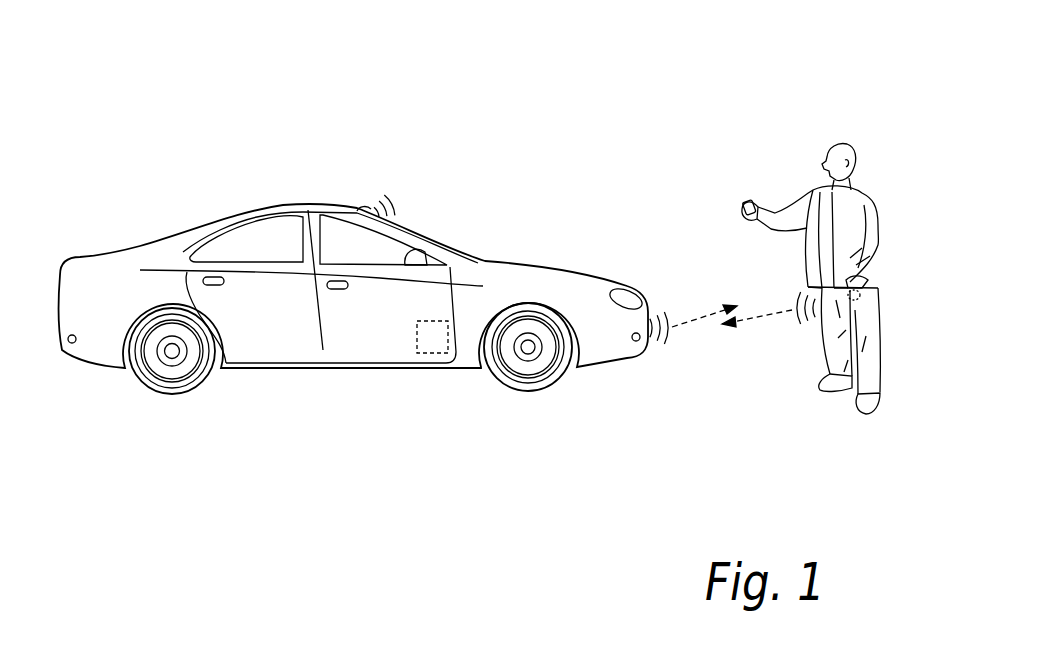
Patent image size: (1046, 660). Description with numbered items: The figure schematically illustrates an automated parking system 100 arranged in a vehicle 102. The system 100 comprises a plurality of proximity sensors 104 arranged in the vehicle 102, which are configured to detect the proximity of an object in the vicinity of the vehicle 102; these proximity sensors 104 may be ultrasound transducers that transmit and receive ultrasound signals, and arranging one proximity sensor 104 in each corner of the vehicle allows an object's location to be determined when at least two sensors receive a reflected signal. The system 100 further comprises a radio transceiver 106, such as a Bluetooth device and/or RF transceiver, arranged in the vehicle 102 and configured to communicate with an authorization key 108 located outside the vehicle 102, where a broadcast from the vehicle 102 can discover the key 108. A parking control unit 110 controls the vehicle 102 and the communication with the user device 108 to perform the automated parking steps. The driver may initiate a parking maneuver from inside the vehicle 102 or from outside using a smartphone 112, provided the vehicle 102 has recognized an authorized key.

The automated parking system 100 is at (612, 120).
The vehicle 102 is at (213, 219).
The proximity sensor 104 is at (74, 344).
The radio transceiver 106 is at (363, 209).
The authorization key 108 is at (852, 297).
The parking control unit 110 is at (437, 354).
The smartphone 112 is at (747, 202).